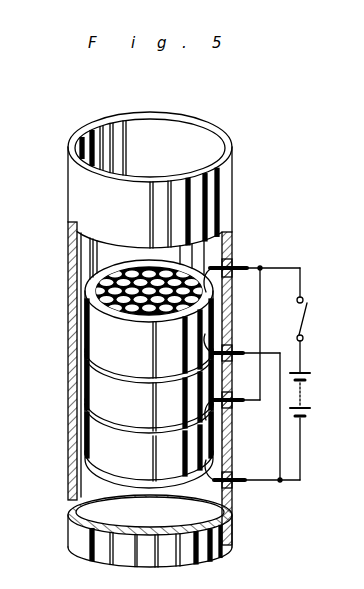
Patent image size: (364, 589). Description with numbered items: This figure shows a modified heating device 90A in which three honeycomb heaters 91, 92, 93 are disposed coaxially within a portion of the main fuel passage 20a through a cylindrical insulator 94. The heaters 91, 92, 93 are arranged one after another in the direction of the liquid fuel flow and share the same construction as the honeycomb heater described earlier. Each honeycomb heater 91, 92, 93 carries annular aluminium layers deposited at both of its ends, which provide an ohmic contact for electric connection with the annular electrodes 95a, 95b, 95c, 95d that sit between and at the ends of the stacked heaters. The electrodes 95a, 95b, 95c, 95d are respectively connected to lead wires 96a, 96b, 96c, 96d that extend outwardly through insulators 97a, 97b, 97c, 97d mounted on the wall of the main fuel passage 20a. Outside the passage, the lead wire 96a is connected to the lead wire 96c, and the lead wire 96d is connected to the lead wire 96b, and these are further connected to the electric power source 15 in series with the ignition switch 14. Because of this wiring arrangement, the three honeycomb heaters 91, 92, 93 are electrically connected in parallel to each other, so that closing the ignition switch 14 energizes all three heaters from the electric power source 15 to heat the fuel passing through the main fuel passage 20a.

The main fuel passage 20a is at (78, 201).
The heating device 90A is at (136, 268).
The annular electrode 95a is at (93, 281).
The cylindrical insulator 94 is at (83, 303).
The honeycomb heater 91 is at (93, 336).
The honeycomb heater 92 is at (93, 386).
The honeycomb heater 93 is at (93, 432).
The annular electrode 95b is at (135, 374).
The annular electrode 95c is at (135, 428).
The annular electrode 95d is at (135, 481).
The lead wire 96a is at (250, 268).
The lead wire 96b is at (250, 351).
The lead wire 96c is at (238, 406).
The lead wire 96d is at (246, 486).
The insulator 97a is at (240, 265).
The insulator 97b is at (237, 345).
The insulator 97c is at (234, 408).
The insulator 97d is at (240, 492).
The ignition switch 14 is at (312, 309).
The electric power source 15 is at (308, 396).